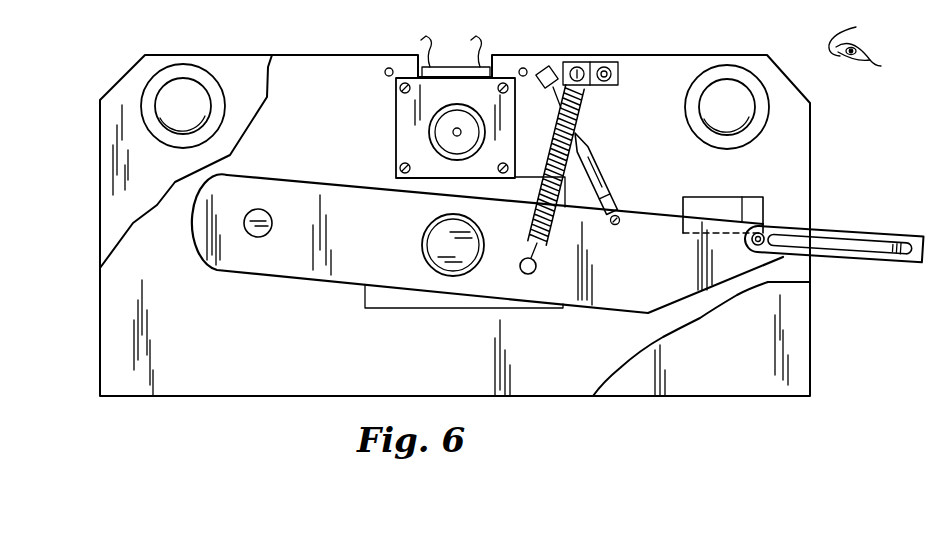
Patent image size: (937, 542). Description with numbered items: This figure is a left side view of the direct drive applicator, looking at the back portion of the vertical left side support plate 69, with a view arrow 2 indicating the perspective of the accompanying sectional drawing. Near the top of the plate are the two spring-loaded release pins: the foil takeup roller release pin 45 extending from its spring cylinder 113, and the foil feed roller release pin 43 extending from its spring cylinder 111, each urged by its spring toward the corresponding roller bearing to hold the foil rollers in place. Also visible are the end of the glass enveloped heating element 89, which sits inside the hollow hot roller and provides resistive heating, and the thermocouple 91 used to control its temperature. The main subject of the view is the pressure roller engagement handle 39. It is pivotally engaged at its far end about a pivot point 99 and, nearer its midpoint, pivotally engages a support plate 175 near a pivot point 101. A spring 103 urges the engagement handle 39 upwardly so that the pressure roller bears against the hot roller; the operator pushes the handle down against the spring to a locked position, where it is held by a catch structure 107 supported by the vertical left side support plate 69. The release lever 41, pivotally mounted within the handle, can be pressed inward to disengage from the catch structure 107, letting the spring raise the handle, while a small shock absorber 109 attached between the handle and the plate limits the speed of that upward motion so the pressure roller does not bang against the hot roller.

The vertical left side support plate 69 is at (330, 98).
The spring cylinder 113 is at (150, 80).
The foil takeup roller release pin 45 is at (183, 87).
The spring cylinder 111 is at (700, 75).
The foil feed roller release pin 43 is at (735, 88).
The thermocouple 91 is at (488, 64).
The heating element 89 is at (457, 132).
The pivot point 99 is at (257, 237).
The pivot point 101 is at (451, 265).
The support plate 175 is at (380, 310).
The spring 103 is at (583, 106).
The shock absorber 109 is at (590, 158).
The catch structure 107 is at (720, 196).
The pressure roller engagement handle 39 is at (900, 273).
The release lever 41 is at (893, 249).
The view direction arrow 2 is at (842, 57).